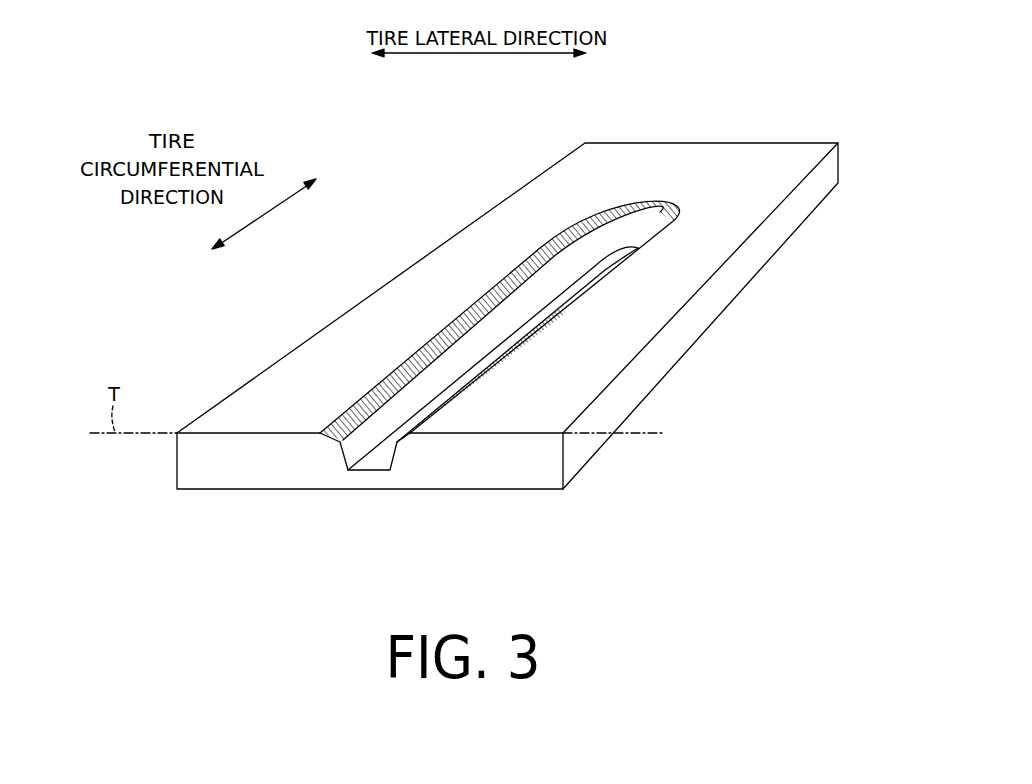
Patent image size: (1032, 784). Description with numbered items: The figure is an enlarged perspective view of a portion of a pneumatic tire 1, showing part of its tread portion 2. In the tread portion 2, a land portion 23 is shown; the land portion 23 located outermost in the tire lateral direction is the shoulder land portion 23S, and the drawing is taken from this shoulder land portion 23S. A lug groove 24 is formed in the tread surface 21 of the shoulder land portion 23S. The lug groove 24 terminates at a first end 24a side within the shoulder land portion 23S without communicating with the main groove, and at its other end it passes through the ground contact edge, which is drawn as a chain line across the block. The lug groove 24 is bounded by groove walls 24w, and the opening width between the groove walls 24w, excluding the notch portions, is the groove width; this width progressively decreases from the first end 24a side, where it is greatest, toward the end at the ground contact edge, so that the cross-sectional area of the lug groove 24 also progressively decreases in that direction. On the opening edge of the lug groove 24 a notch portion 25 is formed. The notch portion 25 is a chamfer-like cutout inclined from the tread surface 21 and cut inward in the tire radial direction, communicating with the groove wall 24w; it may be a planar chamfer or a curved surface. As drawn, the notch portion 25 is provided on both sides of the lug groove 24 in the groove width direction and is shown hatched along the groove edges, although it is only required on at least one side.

The pneumatic tire 1 is at (832, 66).
The tread portion 2 is at (781, 156).
The tread surface 21 is at (706, 162).
The land portion 23 is at (487, 233).
The shoulder land portion 23S is at (452, 131).
The lug groove 24 is at (490, 325).
The first end 24a is at (660, 204).
The groove wall 24w is at (552, 278).
The notch portion 25 is at (428, 340).